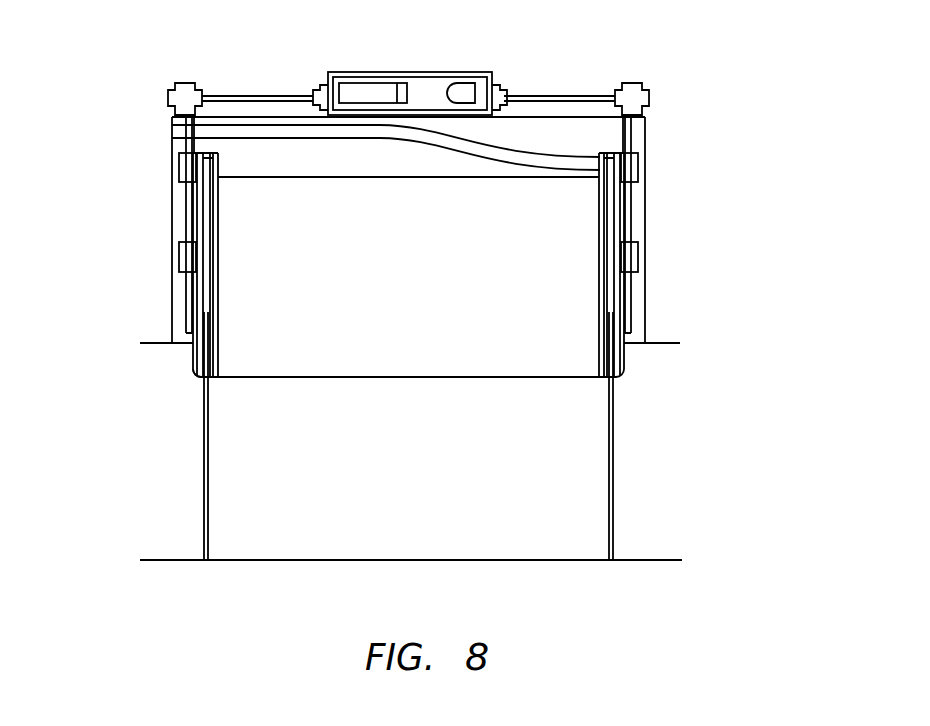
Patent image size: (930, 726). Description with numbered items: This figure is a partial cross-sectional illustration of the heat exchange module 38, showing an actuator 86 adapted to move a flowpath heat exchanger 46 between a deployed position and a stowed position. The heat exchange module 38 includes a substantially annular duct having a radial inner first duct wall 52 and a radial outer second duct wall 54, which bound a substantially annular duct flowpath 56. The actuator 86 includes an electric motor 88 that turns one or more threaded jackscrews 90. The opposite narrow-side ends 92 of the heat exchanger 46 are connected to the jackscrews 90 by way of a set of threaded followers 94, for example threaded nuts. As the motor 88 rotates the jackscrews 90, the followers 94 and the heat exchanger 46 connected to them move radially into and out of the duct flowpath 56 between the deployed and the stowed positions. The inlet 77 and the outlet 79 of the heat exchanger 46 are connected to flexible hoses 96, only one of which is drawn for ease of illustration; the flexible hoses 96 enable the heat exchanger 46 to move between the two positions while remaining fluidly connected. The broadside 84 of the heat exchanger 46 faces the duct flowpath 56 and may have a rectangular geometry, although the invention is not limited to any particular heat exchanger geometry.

The heat exchange module 38 is at (712, 127).
The flowpath heat exchanger 46 is at (443, 378).
The radial inner first duct wall 52 is at (663, 562).
The radial outer second duct wall 54 is at (667, 341).
The duct flowpath 56 is at (145, 468).
The inlet 77 is at (583, 206).
The outlet 79 is at (600, 160).
The broadside 84 is at (257, 363).
The actuator 86 is at (638, 68).
The electric motor 88 is at (475, 72).
The threaded jackscrew 90 is at (172, 150).
The narrow-side end 92 is at (191, 358).
The threaded follower 94 is at (179, 175).
The flexible hose 96 is at (240, 125).